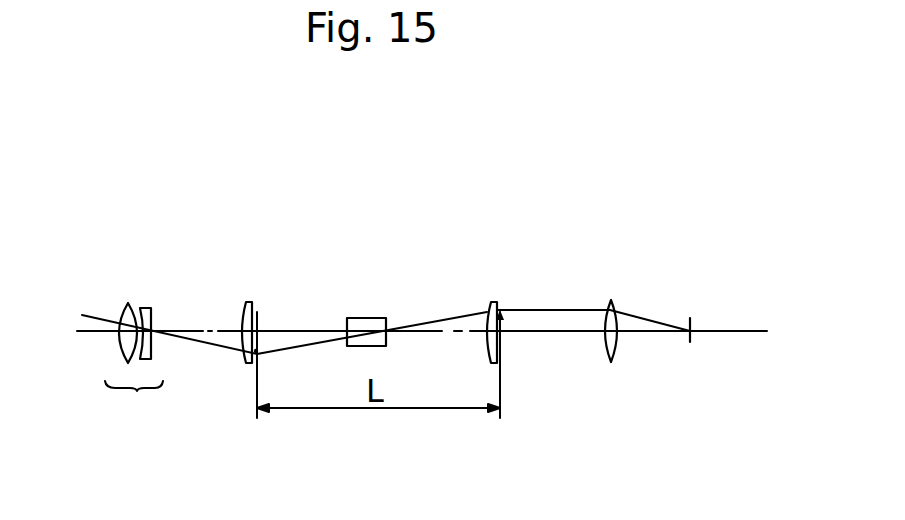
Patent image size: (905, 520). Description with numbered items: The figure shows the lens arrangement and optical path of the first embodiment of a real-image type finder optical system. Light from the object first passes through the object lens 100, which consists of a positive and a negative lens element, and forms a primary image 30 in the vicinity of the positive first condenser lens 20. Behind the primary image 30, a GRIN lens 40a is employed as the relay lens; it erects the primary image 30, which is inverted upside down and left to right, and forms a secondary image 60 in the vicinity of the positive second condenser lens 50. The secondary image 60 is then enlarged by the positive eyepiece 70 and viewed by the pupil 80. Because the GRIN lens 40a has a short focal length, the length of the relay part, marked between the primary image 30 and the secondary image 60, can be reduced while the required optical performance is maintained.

The first condenser lens 20 is at (240, 310).
The primary image 30 is at (256, 318).
The GRIN lens 40a is at (360, 318).
The second condenser lens 50 is at (490, 302).
The secondary image 60 is at (502, 347).
The eyepiece 70 is at (617, 357).
The pupil 80 is at (693, 323).
The object lens 100 is at (142, 388).